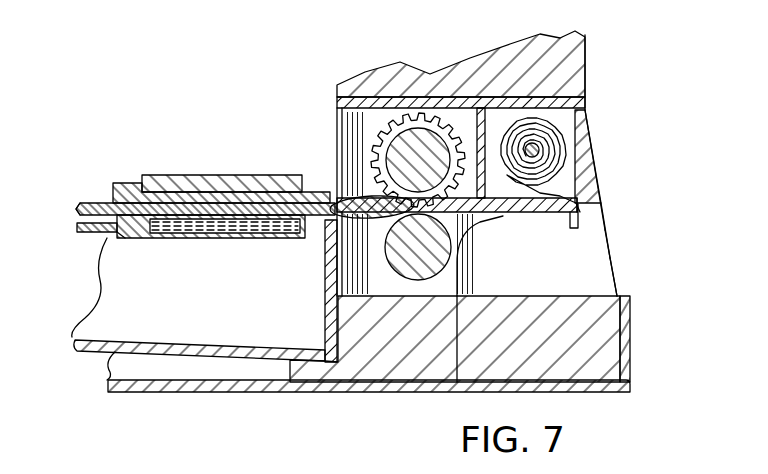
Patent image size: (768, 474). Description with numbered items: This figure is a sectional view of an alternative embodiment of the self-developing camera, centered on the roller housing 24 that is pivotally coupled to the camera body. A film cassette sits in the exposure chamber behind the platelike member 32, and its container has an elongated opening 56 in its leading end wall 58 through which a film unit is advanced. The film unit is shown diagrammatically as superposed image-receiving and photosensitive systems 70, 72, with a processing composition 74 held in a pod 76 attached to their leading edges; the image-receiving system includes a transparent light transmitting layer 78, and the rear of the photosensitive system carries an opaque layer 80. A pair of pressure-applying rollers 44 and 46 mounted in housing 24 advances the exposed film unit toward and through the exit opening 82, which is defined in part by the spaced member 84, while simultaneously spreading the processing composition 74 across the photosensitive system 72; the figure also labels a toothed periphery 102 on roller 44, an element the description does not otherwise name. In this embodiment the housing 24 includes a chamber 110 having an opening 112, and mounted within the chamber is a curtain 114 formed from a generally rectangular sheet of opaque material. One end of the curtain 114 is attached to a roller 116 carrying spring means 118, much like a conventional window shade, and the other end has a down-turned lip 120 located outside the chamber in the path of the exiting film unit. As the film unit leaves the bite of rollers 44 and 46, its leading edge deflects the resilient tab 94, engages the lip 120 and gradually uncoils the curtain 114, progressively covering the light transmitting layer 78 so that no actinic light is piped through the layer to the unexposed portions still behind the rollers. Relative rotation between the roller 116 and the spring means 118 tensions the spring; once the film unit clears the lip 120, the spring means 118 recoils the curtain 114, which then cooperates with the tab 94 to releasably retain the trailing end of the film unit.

The housing 24 is at (642, 322).
The platelike member 32 is at (212, 174).
The roller 44 is at (400, 166).
The roller 46 is at (401, 252).
The elongated opening 56 is at (286, 230).
The leading end wall 58 is at (325, 280).
The image-receiving system 70 is at (77, 204).
The photosensitive system 72 is at (76, 210).
The processing composition 74 is at (326, 242).
The pod 76 is at (532, 212).
The light transmitting layer 78 is at (112, 182).
The opaque layer 80 is at (76, 212).
The exit opening 82 is at (625, 257).
The spaced member 84 is at (613, 293).
The resilient tab 94 is at (473, 236).
The gear teeth 102 is at (373, 140).
The chamber 110 is at (580, 136).
The opening 112 is at (600, 214).
The curtain 114 is at (566, 164).
The roller 116 is at (579, 114).
The spring means 118 is at (534, 149).
The down-turned lip 120 is at (609, 247).